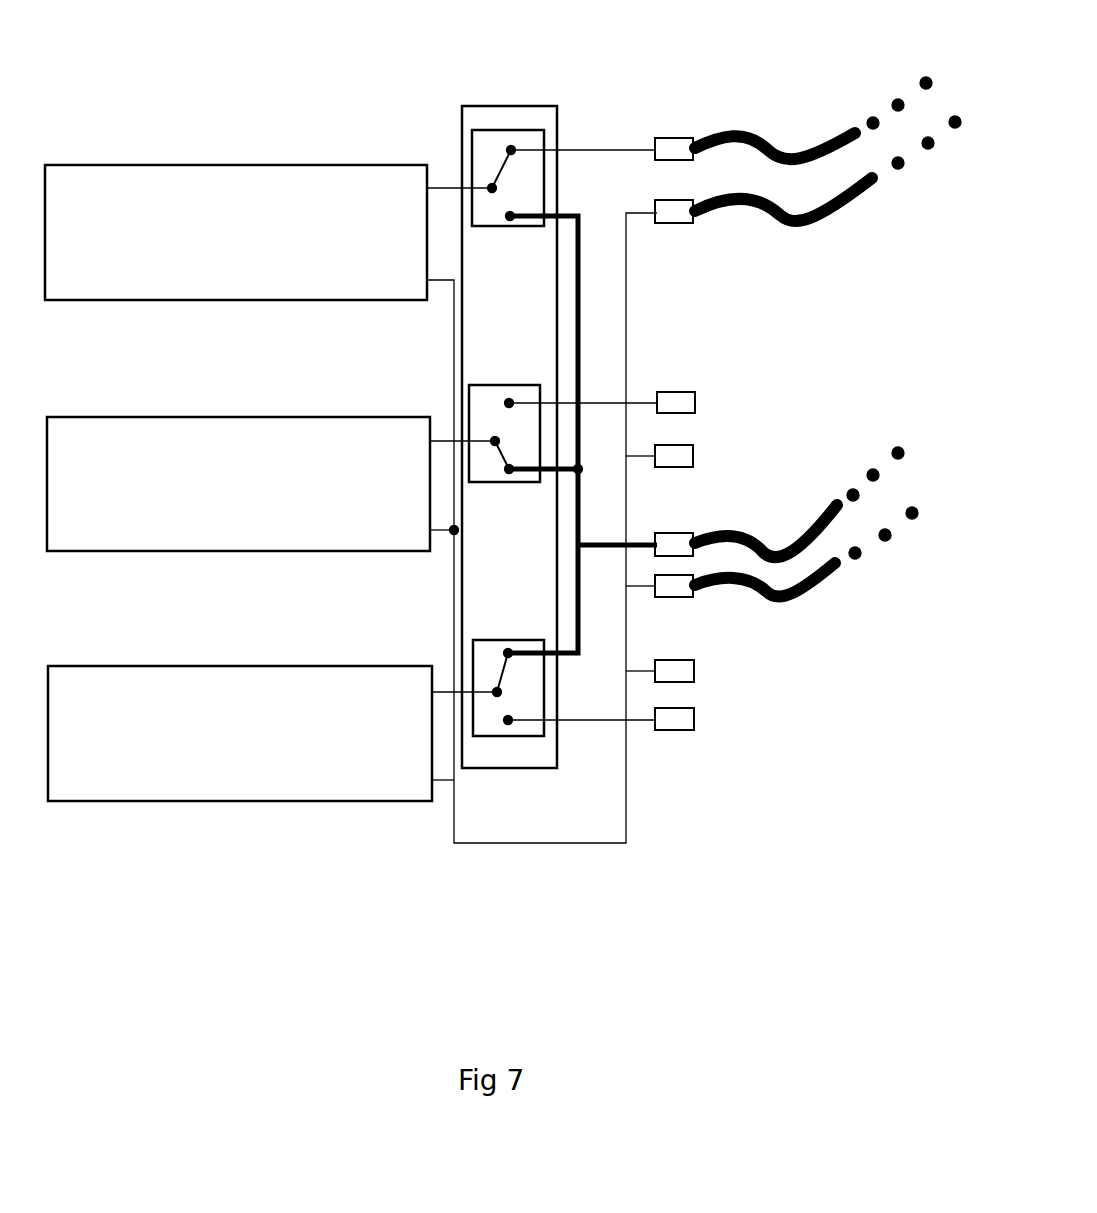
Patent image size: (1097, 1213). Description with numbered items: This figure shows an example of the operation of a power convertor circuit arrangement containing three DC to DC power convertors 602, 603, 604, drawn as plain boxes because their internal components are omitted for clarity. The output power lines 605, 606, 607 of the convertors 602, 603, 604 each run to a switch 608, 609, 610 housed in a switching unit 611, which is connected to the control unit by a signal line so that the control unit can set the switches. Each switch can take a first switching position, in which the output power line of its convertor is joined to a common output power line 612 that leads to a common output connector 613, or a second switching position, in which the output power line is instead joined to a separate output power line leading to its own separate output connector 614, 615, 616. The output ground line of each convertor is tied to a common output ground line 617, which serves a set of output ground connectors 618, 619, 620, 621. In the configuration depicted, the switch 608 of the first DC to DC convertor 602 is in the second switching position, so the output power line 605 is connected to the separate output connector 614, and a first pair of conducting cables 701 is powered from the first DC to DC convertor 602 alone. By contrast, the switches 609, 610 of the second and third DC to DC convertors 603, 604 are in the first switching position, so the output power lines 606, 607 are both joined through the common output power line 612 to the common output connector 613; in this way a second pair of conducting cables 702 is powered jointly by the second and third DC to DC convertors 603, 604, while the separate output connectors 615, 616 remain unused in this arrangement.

The DC to DC power convertor 602 is at (100, 163).
The DC to DC power convertor 603 is at (85, 416).
The DC to DC power convertor 604 is at (85, 665).
The output power line 605 is at (441, 185).
The output power line 606 is at (444, 438).
The output power line 607 is at (446, 690).
The switch 608 is at (505, 130).
The switch 609 is at (490, 384).
The switch 610 is at (494, 639).
The switching unit 611 is at (510, 770).
The common output power line 612 is at (580, 312).
The common output connector 613 is at (690, 533).
The separate output connector 614 is at (668, 138).
The separate output connector 615 is at (688, 392).
The separate output connector 616 is at (678, 730).
The common output ground line 617 is at (555, 845).
The output ground connector 618 is at (680, 200).
The output ground connector 619 is at (690, 445).
The output ground connector 620 is at (690, 598).
The output ground connector 621 is at (680, 660).
The first pair of conducting cables 701 is at (794, 147).
The second pair of conducting cables 702 is at (797, 517).